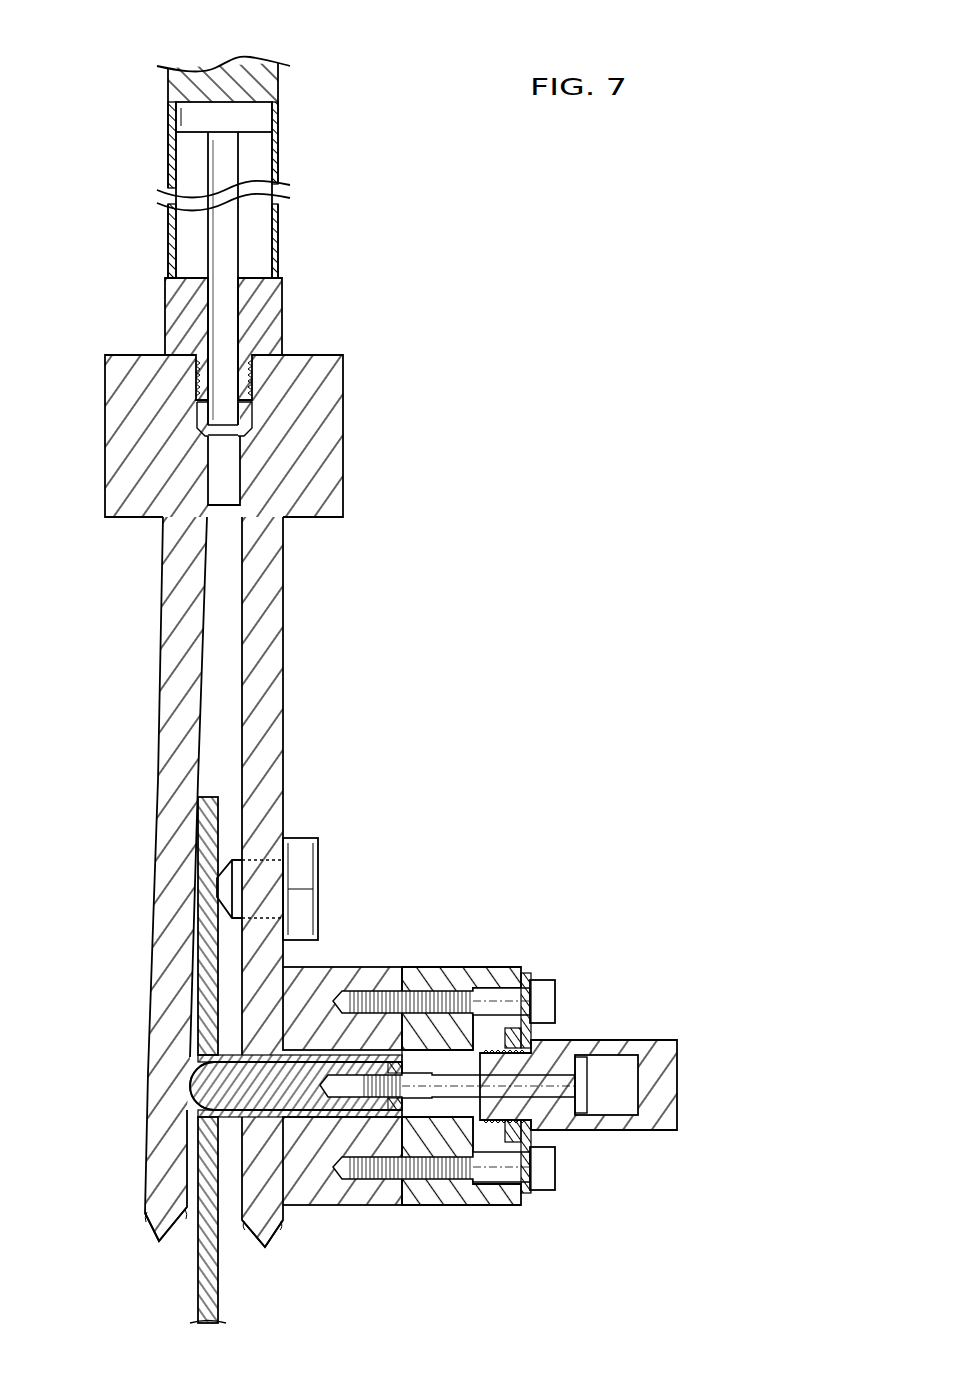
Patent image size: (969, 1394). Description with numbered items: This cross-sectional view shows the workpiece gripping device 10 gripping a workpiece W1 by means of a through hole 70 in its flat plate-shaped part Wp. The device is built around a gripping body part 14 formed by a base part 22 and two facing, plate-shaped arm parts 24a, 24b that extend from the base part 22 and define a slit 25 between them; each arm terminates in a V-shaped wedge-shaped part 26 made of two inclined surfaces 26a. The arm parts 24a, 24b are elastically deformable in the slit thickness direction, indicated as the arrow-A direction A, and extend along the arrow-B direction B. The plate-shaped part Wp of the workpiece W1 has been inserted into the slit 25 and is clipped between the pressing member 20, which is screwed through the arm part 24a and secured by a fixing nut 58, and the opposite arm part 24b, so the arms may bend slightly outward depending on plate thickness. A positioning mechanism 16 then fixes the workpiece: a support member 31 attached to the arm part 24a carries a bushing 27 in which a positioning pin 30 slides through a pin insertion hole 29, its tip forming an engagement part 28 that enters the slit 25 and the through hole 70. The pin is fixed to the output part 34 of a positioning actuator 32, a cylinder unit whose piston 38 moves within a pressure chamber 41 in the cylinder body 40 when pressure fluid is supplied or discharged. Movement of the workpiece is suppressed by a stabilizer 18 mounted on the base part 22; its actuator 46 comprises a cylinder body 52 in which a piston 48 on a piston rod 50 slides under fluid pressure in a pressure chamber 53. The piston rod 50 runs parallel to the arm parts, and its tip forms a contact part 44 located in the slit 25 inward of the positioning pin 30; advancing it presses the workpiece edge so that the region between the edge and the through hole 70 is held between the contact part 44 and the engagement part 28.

The workpiece gripping device 10 is at (88, 350).
The gripping body part 14 is at (217, 882).
The positioning mechanism 16 is at (419, 1044).
The stabilizer 18 is at (158, 88).
The pressing member 20 is at (218, 898).
The base part 22 is at (113, 437).
The arm part 24a is at (272, 664).
The arm part 24b is at (175, 665).
The slit 25 is at (223, 698).
The wedge-shaped part 26 is at (160, 1242).
The inclined surface 26a is at (192, 1210).
The bushing 27 is at (352, 1053).
The engagement part 28 is at (247, 1080).
The pin insertion hole 29 is at (247, 1098).
The positioning pin 30 is at (320, 1053).
The support member 31 is at (447, 970).
The positioning actuator 32 is at (602, 1083).
The output part 34 is at (567, 1080).
The piston 38 is at (583, 1082).
The cylinder body 40 is at (570, 1040).
The pressure chamber 41 is at (627, 1060).
The contact part 44 is at (226, 465).
The actuator 46 is at (286, 238).
The piston 48 is at (258, 122).
The piston rod 50 is at (222, 163).
The cylinder body 52 is at (275, 166).
The pressure chamber 53 is at (190, 240).
The fixing nut 58 is at (305, 861).
The through hole 70 is at (198, 1063).
The workpiece W1 is at (222, 812).
The plate-shaped part Wp is at (208, 953).
The arrow-A direction A is at (489, 822).
The arrow-B direction B is at (470, 741).